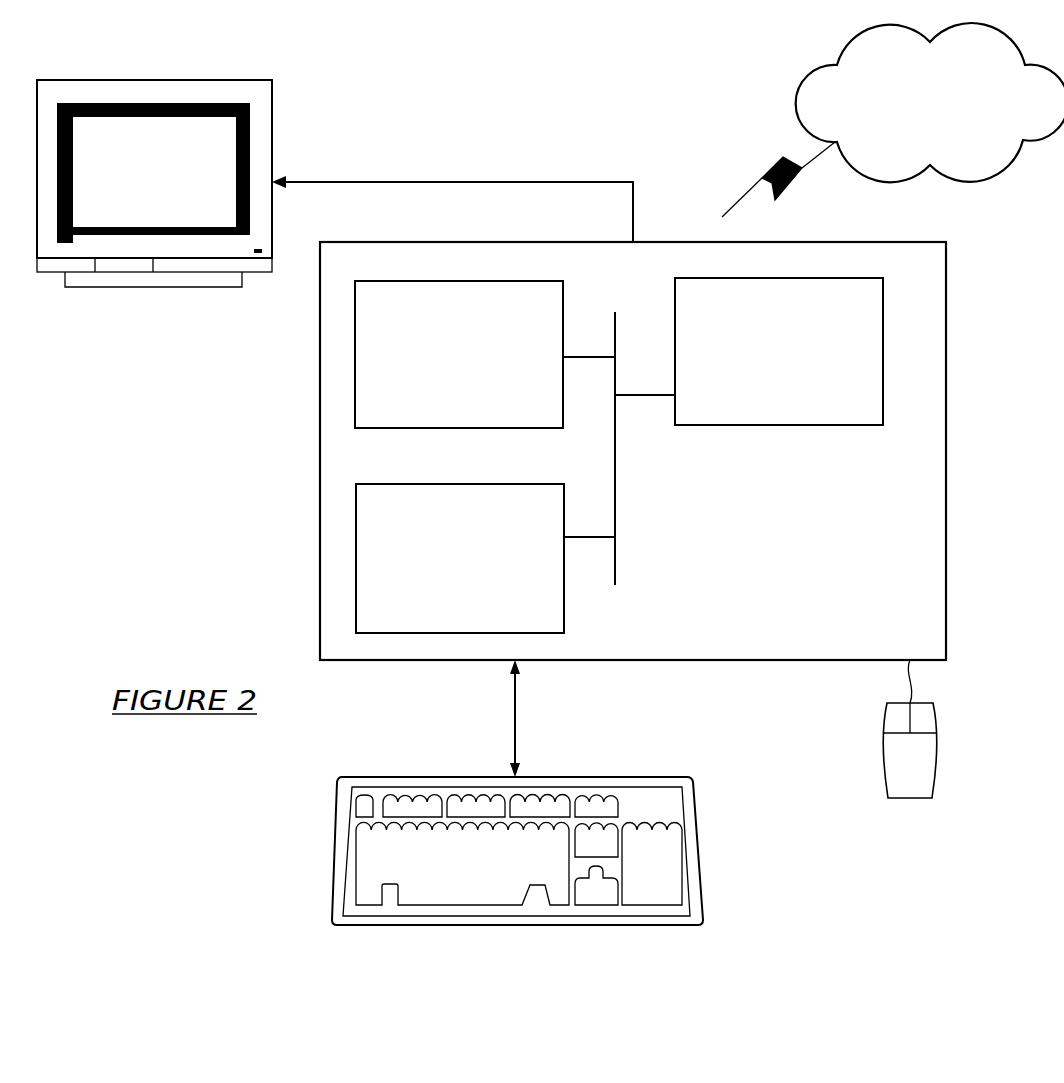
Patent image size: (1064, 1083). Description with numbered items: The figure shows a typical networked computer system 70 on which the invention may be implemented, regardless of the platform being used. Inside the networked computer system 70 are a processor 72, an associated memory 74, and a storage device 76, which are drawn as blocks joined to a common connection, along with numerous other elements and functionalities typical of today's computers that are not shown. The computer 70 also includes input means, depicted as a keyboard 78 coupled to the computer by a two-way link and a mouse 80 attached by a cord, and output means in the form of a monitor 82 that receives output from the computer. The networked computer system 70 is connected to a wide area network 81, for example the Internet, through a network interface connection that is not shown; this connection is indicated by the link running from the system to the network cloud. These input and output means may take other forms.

The networked computer system 70 is at (683, 451).
The processor 72 is at (781, 362).
The memory 74 is at (443, 368).
The storage device 76 is at (442, 569).
The keyboard 78 is at (428, 872).
The mouse 80 is at (895, 774).
The wide area network 81 is at (918, 138).
The monitor 82 is at (138, 193).